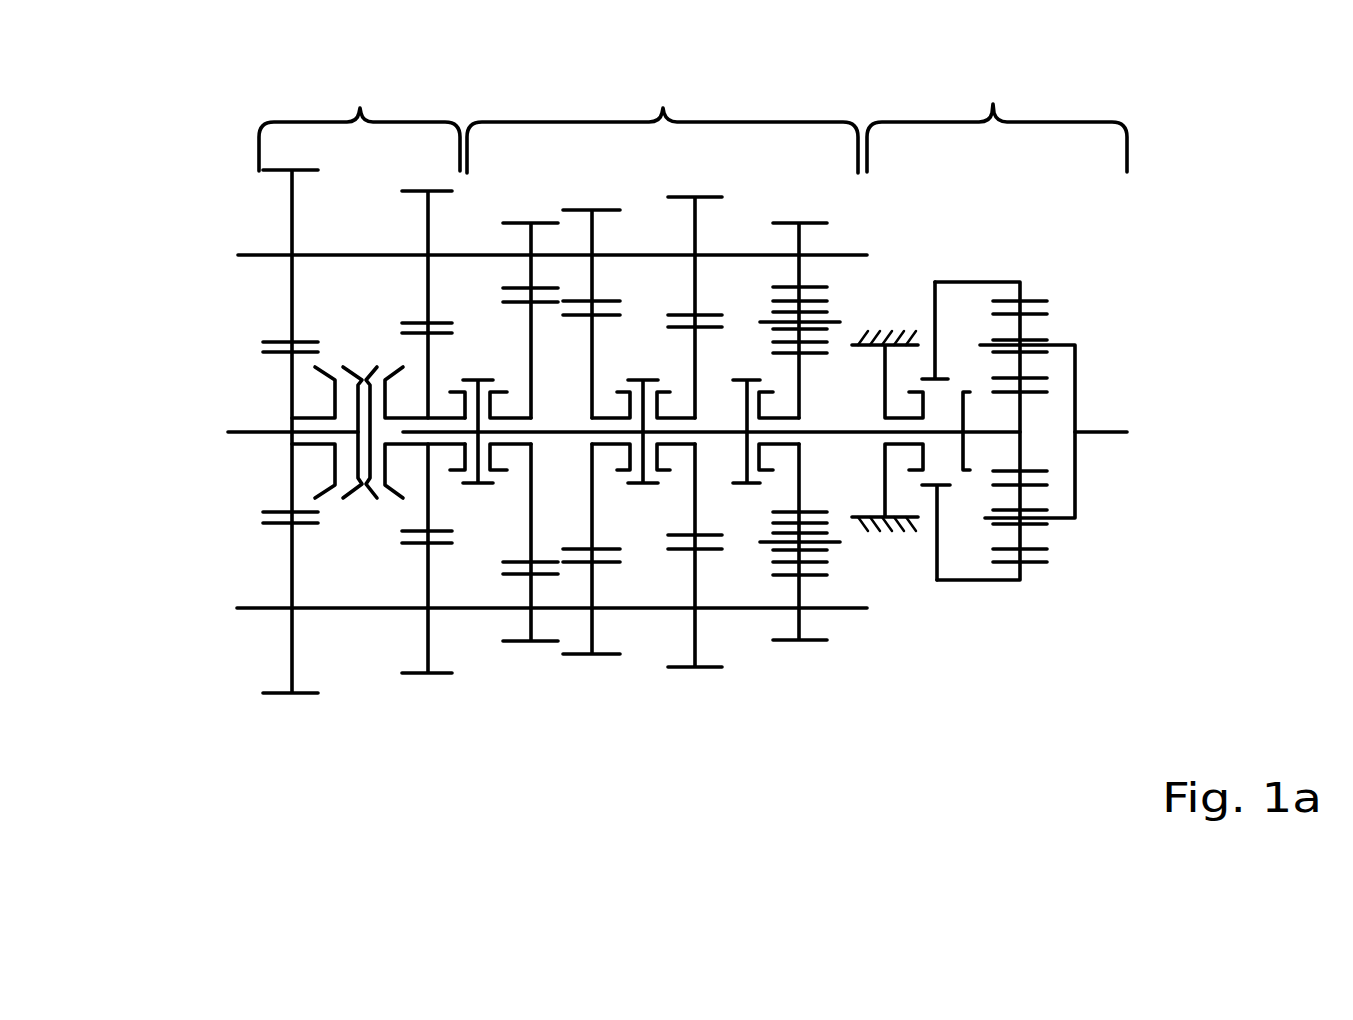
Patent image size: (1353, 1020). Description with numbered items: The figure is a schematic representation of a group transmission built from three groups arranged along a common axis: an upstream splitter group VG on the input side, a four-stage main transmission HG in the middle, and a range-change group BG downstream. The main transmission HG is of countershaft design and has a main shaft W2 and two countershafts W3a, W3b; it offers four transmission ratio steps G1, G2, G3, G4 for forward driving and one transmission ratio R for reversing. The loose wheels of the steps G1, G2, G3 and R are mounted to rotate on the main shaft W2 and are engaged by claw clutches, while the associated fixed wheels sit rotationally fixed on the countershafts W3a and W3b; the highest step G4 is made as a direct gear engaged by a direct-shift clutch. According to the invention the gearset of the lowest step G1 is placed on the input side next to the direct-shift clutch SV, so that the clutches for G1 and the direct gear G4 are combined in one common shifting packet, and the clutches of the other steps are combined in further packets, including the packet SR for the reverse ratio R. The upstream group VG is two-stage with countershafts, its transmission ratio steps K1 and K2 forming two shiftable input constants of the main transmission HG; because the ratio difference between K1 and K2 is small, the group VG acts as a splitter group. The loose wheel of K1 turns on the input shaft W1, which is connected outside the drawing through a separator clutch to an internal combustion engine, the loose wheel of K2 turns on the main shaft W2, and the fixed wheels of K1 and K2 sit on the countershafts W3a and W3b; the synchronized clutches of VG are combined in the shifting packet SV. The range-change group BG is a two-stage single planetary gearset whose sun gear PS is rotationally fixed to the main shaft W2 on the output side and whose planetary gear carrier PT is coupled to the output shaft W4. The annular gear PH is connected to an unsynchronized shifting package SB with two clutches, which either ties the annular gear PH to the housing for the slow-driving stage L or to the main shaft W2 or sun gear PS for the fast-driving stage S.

The upstream group VG is at (359, 124).
The main transmission HG is at (662, 125).
The range-change group BG is at (997, 125).
The first transmission ratio step K1 is at (285, 431).
The second transmission ratio step K2 is at (420, 432).
The first transmission ratio step G1 is at (530, 415).
The second transmission ratio step G2 is at (591, 416).
The third transmission ratio step G3 is at (695, 416).
The fourth transmission ratio step G4 is at (437, 408).
The transmission ratio for reversing R is at (800, 415).
The shifting packet SV is at (378, 417).
The shifting packet SR is at (764, 414).
The shifting packet SB is at (918, 431).
The fast-driving stage S is at (975, 442).
The slow-driving stage L is at (902, 477).
The annular gear PH is at (977, 282).
The planetary gear carrier PT is at (1060, 345).
The sun gear PS is at (1022, 419).
The input shaft W1 is at (265, 432).
The main shaft W2 is at (563, 432).
The countershaft W3a is at (265, 255).
The countershaft W3b is at (265, 608).
The output shaft W4 is at (1093, 433).